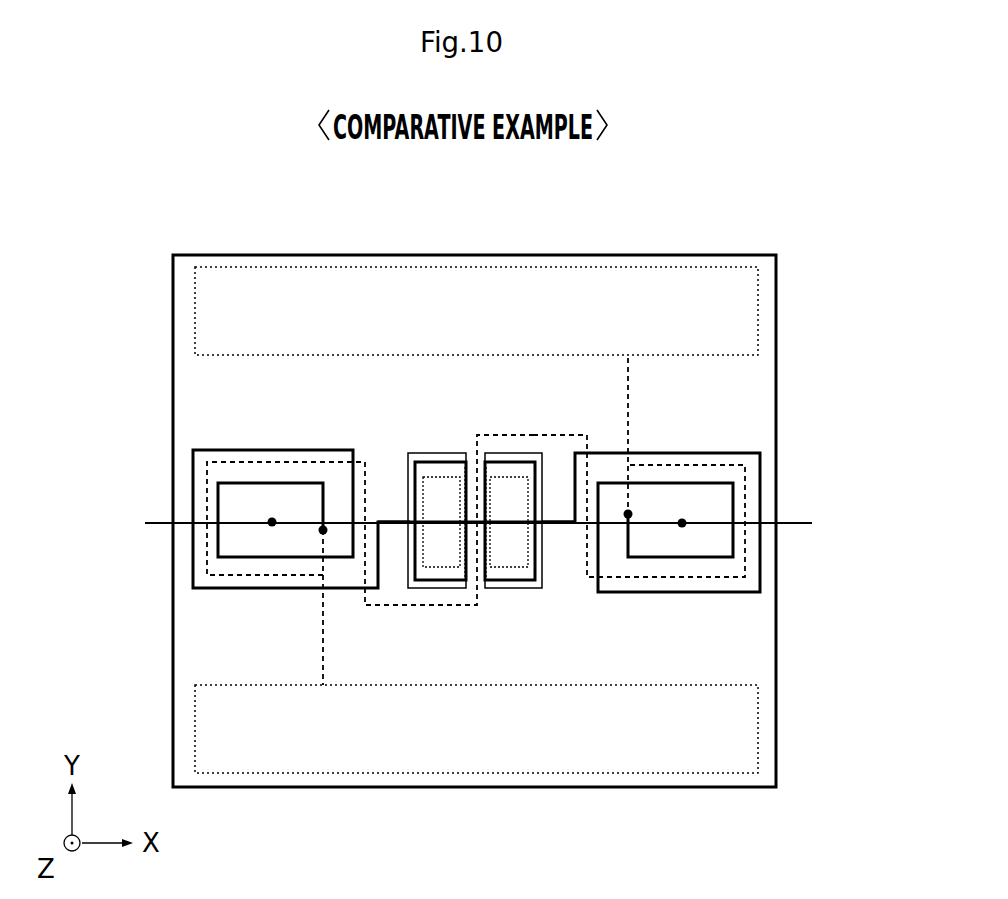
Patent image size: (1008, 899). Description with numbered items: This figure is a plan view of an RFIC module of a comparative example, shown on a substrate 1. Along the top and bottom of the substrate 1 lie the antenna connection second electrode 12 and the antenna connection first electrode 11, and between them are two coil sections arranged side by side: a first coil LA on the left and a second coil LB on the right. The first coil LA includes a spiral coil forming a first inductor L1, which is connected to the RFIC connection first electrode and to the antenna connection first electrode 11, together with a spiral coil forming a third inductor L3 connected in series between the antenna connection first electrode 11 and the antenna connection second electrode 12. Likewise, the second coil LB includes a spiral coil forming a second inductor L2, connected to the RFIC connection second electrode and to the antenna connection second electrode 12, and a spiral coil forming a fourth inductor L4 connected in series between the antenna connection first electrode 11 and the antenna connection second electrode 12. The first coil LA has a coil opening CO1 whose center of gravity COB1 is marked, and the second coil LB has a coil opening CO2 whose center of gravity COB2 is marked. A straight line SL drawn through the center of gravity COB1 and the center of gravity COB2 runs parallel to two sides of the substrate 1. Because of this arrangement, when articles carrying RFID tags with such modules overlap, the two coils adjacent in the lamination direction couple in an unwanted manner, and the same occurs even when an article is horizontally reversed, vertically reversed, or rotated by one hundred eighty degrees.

The substrate 1 is at (763, 634).
The antenna connection first electrode 11 is at (492, 760).
The antenna connection second electrode 12 is at (492, 280).
The straight line SL is at (797, 521).
The first coil LA is at (302, 562).
The second coil LB is at (709, 478).
The first inductor L1 is at (272, 590).
The second inductor L2 is at (672, 452).
The third inductor L3 is at (205, 513).
The fourth inductor L4 is at (745, 540).
The center of gravity of coil opening CO1 COB1 is at (272, 522).
The center of gravity of coil opening CO2 COB2 is at (682, 523).
The coil opening CO1 is at (222, 548).
The coil opening CO2 is at (731, 549).